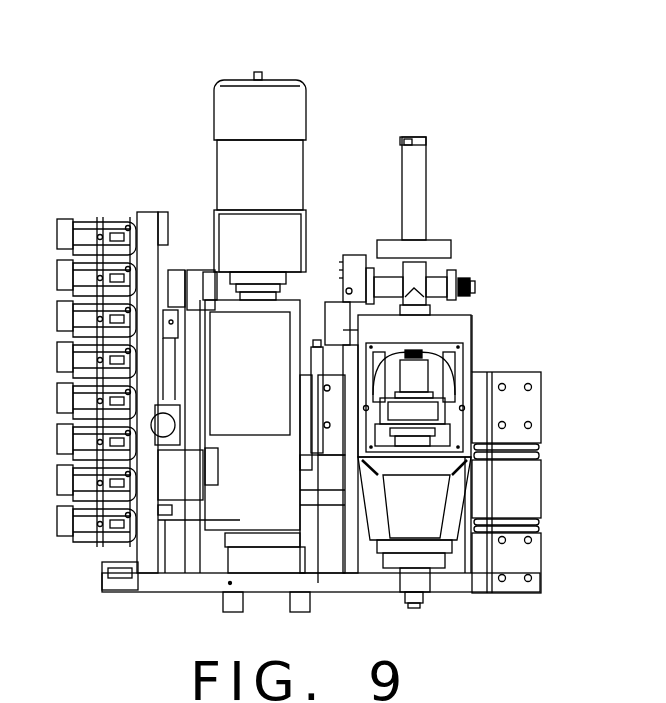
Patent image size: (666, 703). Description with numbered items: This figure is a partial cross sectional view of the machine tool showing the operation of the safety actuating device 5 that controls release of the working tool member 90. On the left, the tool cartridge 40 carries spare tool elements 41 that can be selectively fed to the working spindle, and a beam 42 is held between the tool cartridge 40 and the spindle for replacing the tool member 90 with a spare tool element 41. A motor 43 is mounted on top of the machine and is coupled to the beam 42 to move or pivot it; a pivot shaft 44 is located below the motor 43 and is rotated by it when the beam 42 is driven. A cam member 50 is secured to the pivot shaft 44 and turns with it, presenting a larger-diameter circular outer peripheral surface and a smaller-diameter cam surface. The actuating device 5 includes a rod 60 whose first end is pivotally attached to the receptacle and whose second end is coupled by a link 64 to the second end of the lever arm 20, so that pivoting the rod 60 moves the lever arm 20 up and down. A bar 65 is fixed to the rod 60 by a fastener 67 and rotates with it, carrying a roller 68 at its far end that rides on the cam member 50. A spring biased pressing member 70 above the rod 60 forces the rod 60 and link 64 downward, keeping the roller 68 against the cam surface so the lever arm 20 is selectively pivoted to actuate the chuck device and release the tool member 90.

The actuating device 5 is at (474, 255).
The lever arm 20 is at (437, 347).
The tool cartridge 40 is at (145, 213).
The spare tool element 41 is at (117, 588).
The beam 42 is at (163, 590).
The motor 43 is at (240, 103).
The pivot shaft 44 is at (305, 393).
The cam member 50 is at (318, 583).
The rod 60 is at (430, 272).
The link 64 is at (423, 312).
The bar 65 is at (353, 256).
The fastener 67 is at (387, 275).
The roller 68 is at (317, 345).
The spring biased pressing member 70 is at (418, 160).
The tool member 90 is at (420, 608).